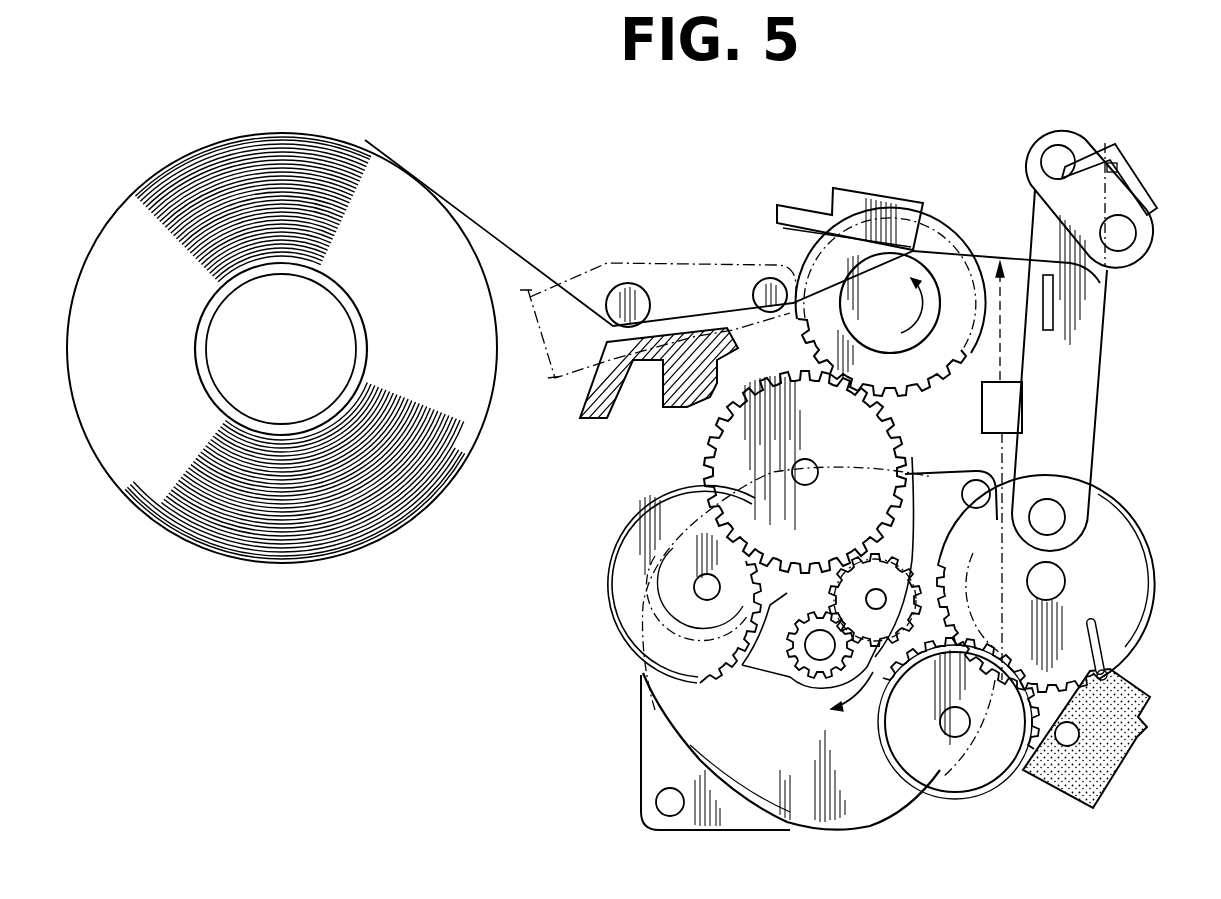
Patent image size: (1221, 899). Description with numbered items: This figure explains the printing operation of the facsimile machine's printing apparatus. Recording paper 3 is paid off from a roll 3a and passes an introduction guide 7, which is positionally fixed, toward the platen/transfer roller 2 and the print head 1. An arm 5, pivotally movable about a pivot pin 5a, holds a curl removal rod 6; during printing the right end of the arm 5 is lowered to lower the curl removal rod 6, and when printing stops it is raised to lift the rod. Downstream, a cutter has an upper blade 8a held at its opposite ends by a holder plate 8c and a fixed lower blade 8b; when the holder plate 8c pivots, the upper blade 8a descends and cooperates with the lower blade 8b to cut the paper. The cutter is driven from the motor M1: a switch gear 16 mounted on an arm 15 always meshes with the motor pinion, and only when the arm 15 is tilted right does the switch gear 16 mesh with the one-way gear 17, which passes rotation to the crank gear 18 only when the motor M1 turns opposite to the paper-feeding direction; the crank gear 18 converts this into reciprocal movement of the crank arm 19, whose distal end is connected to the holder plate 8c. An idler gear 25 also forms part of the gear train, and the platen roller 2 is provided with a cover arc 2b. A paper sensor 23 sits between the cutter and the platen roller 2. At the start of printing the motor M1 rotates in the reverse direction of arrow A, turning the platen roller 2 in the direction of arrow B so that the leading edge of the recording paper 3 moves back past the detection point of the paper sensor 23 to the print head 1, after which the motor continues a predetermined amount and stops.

The print head 1 is at (861, 188).
The platen/transfer roller 2 is at (917, 333).
The capstan cover arc 2b is at (947, 243).
The recording paper 3 is at (1017, 260).
The roll of recording paper 3a is at (246, 138).
The arm 5 is at (680, 262).
The pivot pin 5a is at (628, 290).
The curl removal rod 6 is at (767, 290).
The introduction guide 7 is at (713, 398).
The upper blade 8a is at (1100, 143).
The lower blade 8b is at (1053, 307).
The holder plate 8c is at (1122, 204).
The arm 15 is at (793, 675).
The switch gear 16 is at (915, 568).
The one-way gear 17 is at (975, 762).
The crank gear 18 is at (1113, 607).
The crank arm 19 is at (1092, 444).
The paper sensor 23 is at (1008, 400).
The idler gear 25 is at (702, 472).
The motor M1 is at (767, 787).